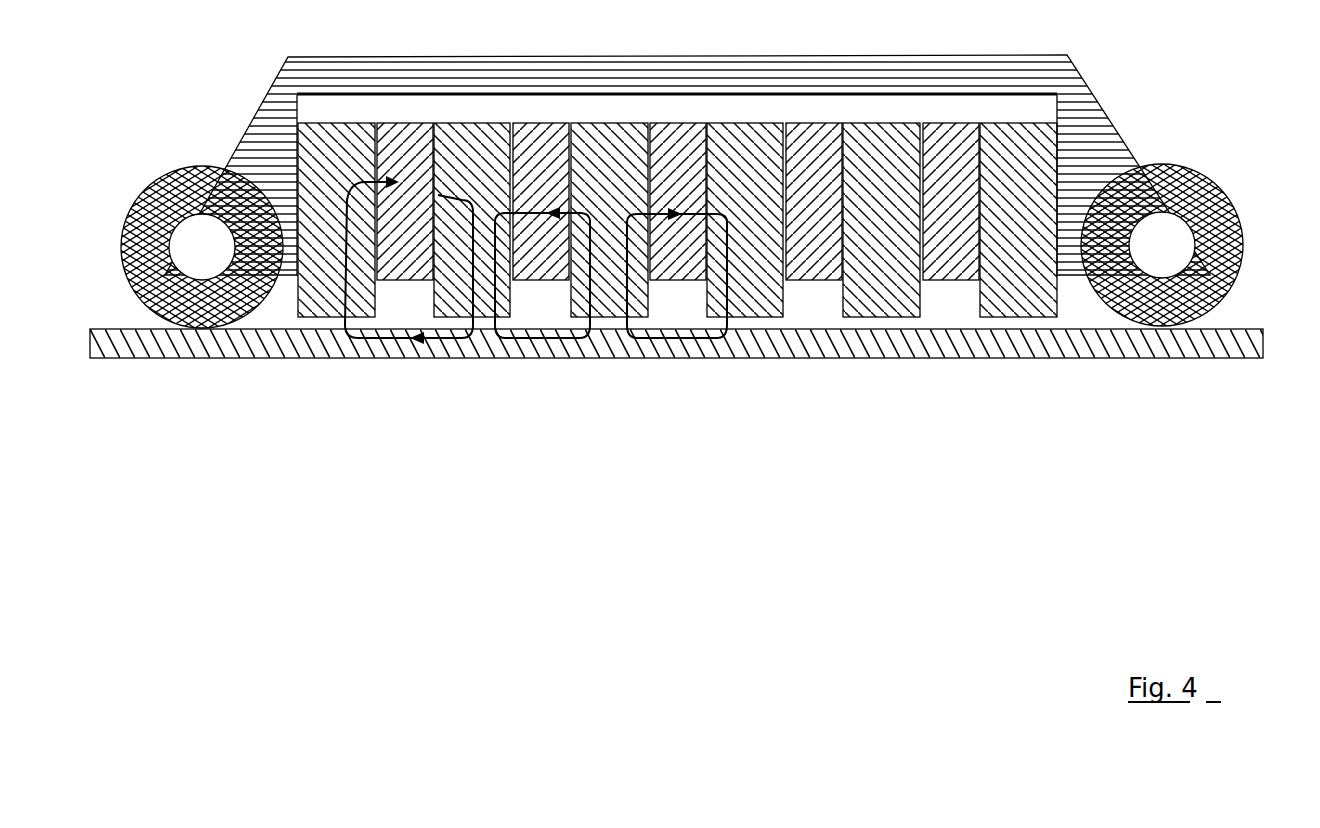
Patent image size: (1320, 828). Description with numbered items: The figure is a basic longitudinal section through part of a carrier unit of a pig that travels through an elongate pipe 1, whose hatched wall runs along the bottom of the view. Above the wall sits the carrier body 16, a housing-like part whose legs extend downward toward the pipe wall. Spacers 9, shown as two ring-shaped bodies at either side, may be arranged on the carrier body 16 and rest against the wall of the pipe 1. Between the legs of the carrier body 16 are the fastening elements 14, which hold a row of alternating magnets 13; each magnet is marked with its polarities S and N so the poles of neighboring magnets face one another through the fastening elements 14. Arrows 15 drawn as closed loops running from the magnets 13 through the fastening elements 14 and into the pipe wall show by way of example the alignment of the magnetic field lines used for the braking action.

The pipe 1 is at (528, 345).
The spacers 9 is at (210, 167).
The magnets 13 is at (417, 253).
The fastening elements 14 is at (347, 293).
The arrows 15 is at (573, 340).
The carrier body 16 is at (1093, 147).